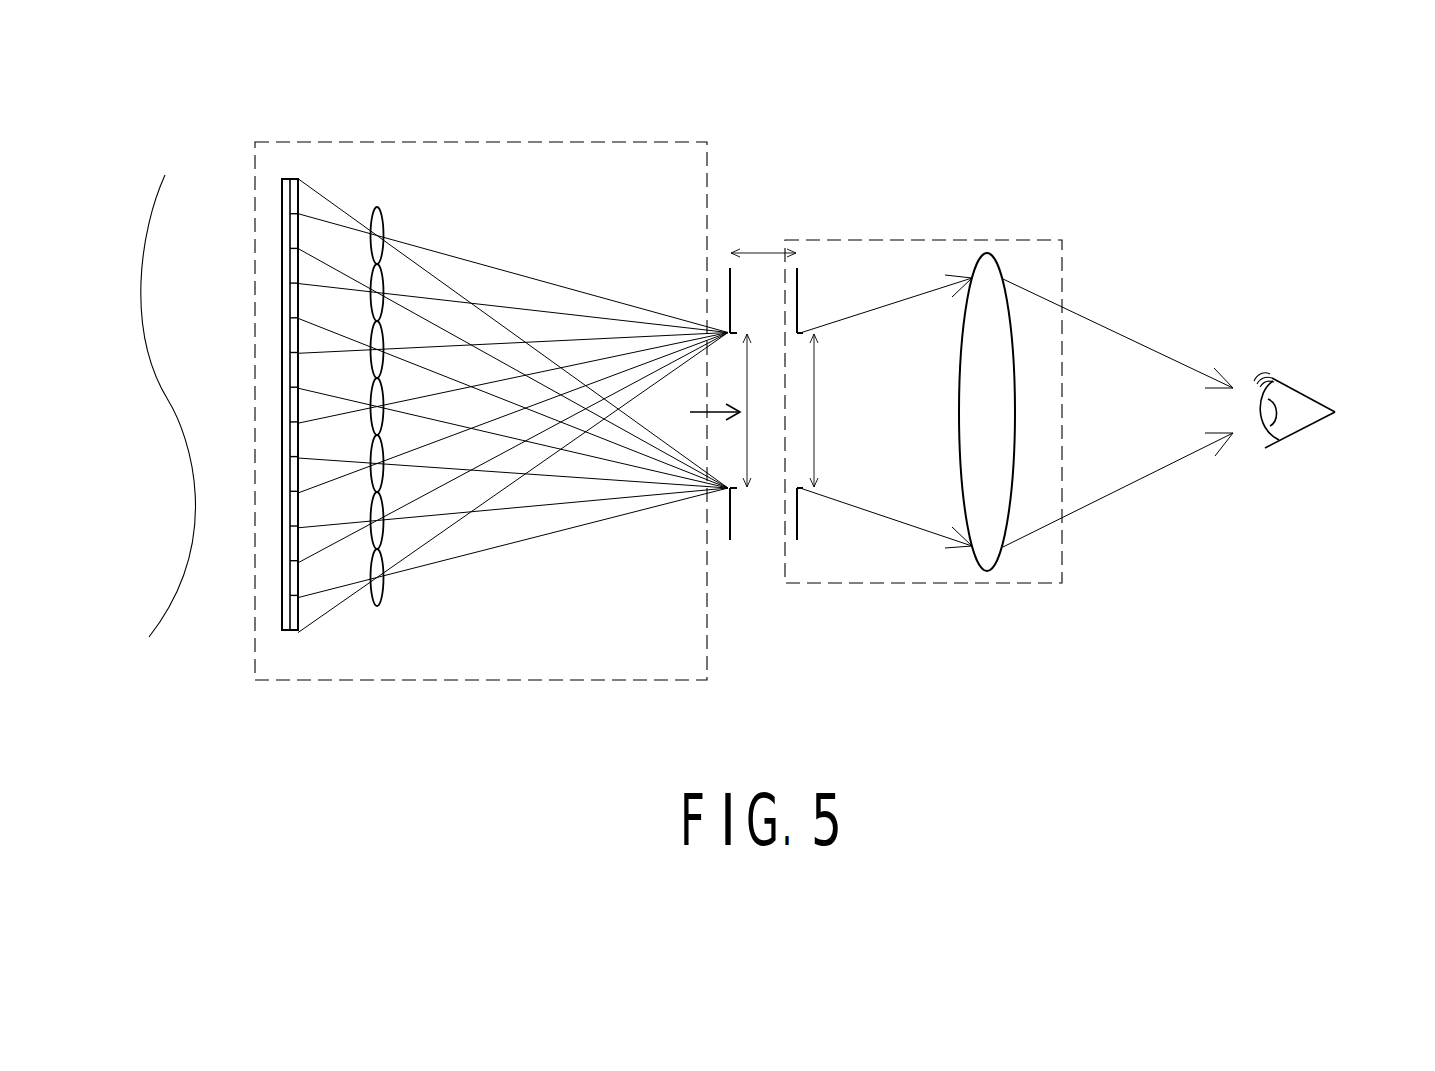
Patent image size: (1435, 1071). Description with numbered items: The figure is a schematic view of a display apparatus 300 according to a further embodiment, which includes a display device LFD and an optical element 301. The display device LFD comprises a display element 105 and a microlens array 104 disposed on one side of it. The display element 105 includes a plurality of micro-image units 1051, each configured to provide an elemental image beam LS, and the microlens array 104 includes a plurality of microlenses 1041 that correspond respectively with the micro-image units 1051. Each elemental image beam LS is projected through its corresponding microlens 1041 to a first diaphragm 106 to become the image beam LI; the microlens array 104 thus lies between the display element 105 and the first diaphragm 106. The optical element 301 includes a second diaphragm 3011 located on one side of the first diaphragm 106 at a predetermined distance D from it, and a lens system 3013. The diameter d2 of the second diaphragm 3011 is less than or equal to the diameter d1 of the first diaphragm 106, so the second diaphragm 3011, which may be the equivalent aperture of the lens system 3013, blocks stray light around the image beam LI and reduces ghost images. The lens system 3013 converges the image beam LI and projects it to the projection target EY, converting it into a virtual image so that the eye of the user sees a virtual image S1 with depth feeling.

The display apparatus 300 is at (766, 389).
The optical element 301 is at (1009, 439).
The second diaphragm 3011 is at (798, 525).
The lens system 3013 is at (988, 567).
The microlens array 104 is at (437, 337).
The microlens 1041 is at (371, 187).
The display element 105 is at (233, 363).
The micro-image unit 1051 is at (290, 243).
The first diaphragm 106 is at (731, 541).
The display device LFD is at (637, 141).
The elemental image beam LS is at (552, 283).
The image beam LI is at (694, 409).
The virtual image S1 is at (160, 175).
The predetermined distance D is at (763, 229).
The diameter of the first diaphragm d1 is at (765, 410).
The diameter of the second diaphragm d2 is at (831, 410).
The projection target EY is at (1295, 417).